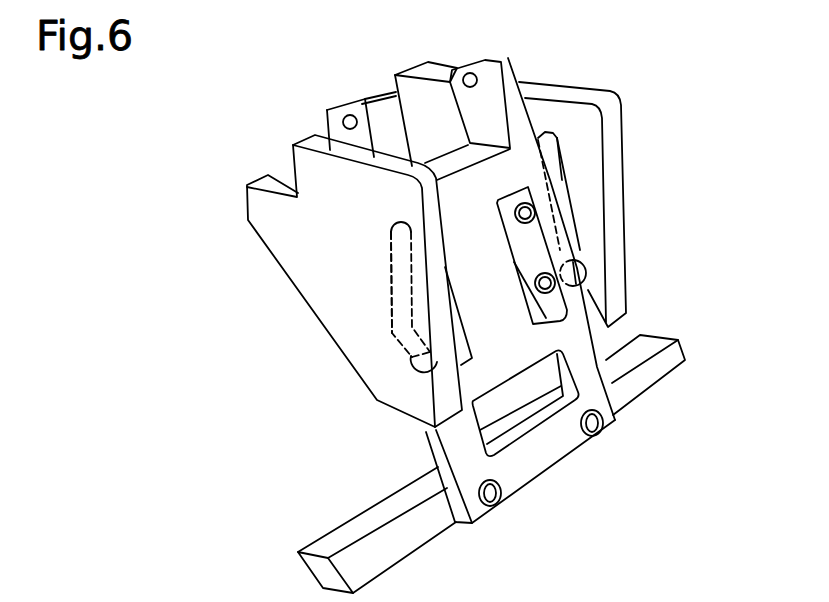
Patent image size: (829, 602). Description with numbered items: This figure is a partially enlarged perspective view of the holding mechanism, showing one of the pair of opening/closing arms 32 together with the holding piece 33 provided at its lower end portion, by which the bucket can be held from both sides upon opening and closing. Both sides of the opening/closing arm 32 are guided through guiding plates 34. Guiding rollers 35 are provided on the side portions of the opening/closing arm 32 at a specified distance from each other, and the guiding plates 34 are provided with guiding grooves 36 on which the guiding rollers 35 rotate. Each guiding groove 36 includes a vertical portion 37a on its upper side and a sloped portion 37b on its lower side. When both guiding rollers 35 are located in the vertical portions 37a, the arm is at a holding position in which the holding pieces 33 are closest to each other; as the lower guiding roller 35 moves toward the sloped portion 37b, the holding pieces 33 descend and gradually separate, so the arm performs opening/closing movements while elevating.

The opening/closing arm 32 is at (557, 465).
The holding piece 33 is at (323, 533).
The guiding plate 34 is at (313, 168).
The guiding roller 35 is at (557, 203).
The guiding groove 36 is at (390, 312).
The vertical portion 37a is at (390, 255).
The sloped portion 37b is at (412, 357).